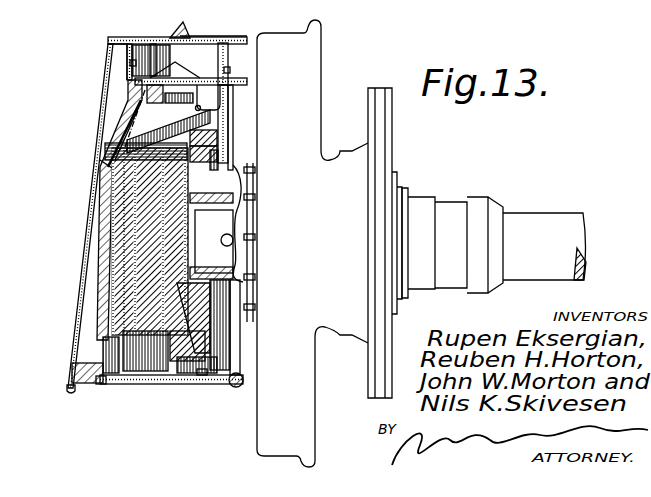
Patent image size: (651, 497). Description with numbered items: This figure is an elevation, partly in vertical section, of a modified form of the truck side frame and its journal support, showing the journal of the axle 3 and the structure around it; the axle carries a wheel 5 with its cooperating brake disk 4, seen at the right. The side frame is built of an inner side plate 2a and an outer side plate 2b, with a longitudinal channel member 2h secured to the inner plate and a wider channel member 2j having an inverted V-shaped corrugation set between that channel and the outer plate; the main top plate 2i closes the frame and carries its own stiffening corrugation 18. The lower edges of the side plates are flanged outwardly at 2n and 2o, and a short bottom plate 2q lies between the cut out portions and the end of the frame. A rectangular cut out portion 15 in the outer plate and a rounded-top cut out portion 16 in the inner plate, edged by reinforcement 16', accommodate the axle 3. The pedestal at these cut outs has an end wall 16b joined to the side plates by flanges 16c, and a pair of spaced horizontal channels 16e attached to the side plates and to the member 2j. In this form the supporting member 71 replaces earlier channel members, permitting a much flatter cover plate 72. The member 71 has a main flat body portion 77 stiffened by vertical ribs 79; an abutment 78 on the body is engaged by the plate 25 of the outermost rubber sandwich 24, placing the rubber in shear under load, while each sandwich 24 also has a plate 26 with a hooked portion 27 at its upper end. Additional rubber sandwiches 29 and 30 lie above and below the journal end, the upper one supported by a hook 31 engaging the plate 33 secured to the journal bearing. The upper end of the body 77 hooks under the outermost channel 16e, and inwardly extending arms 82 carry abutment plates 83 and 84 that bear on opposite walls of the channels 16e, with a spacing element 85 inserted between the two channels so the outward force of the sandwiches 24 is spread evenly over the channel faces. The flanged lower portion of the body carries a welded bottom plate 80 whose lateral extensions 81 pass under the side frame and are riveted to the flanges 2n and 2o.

The inner side plate 2a is at (217, 124).
The outer side plate 2b is at (123, 80).
The channel member 2h is at (252, 59).
The main top plate 2i is at (177, 40).
The channel member 2j is at (183, 19).
The outwardly formed flange 2n is at (196, 332).
The outwardly formed flange 2o is at (98, 362).
The short bottom plate 2q is at (207, 409).
The axle 3 is at (494, 238).
The brake disk 4 is at (399, 243).
The wheel 5 is at (312, 243).
The cut out portion 15 is at (145, 380).
The cut out portion 16 is at (242, 236).
The reinforcement 16' is at (266, 242).
The end wall 16b is at (192, 383).
The flange 16c is at (459, 10).
The horizontal channel 16e is at (192, 46).
The corrugation 18 is at (213, 24).
The rubber sandwich 24 is at (114, 241).
The flat metal plate 25 is at (87, 241).
The metal plate 26 is at (114, 241).
The hooked portion 27 is at (123, 146).
The rubber sandwich 29 is at (222, 137).
The rubber sandwich 30 is at (232, 325).
The hook 31 is at (232, 138).
The plate 33 is at (222, 154).
The supporting member 71 is at (176, 191).
The cover plate 72 is at (201, 194).
The flat body portion 77 is at (62, 303).
The abutment 78 is at (100, 164).
The rib 79 is at (262, 207).
The bottom plate 80 is at (100, 378).
The lateral extension 81 is at (230, 399).
The arm 82 is at (167, 123).
The abutment plate 83 is at (227, 90).
The abutment plate 84 is at (156, 39).
The spacing element 85 is at (172, 67).